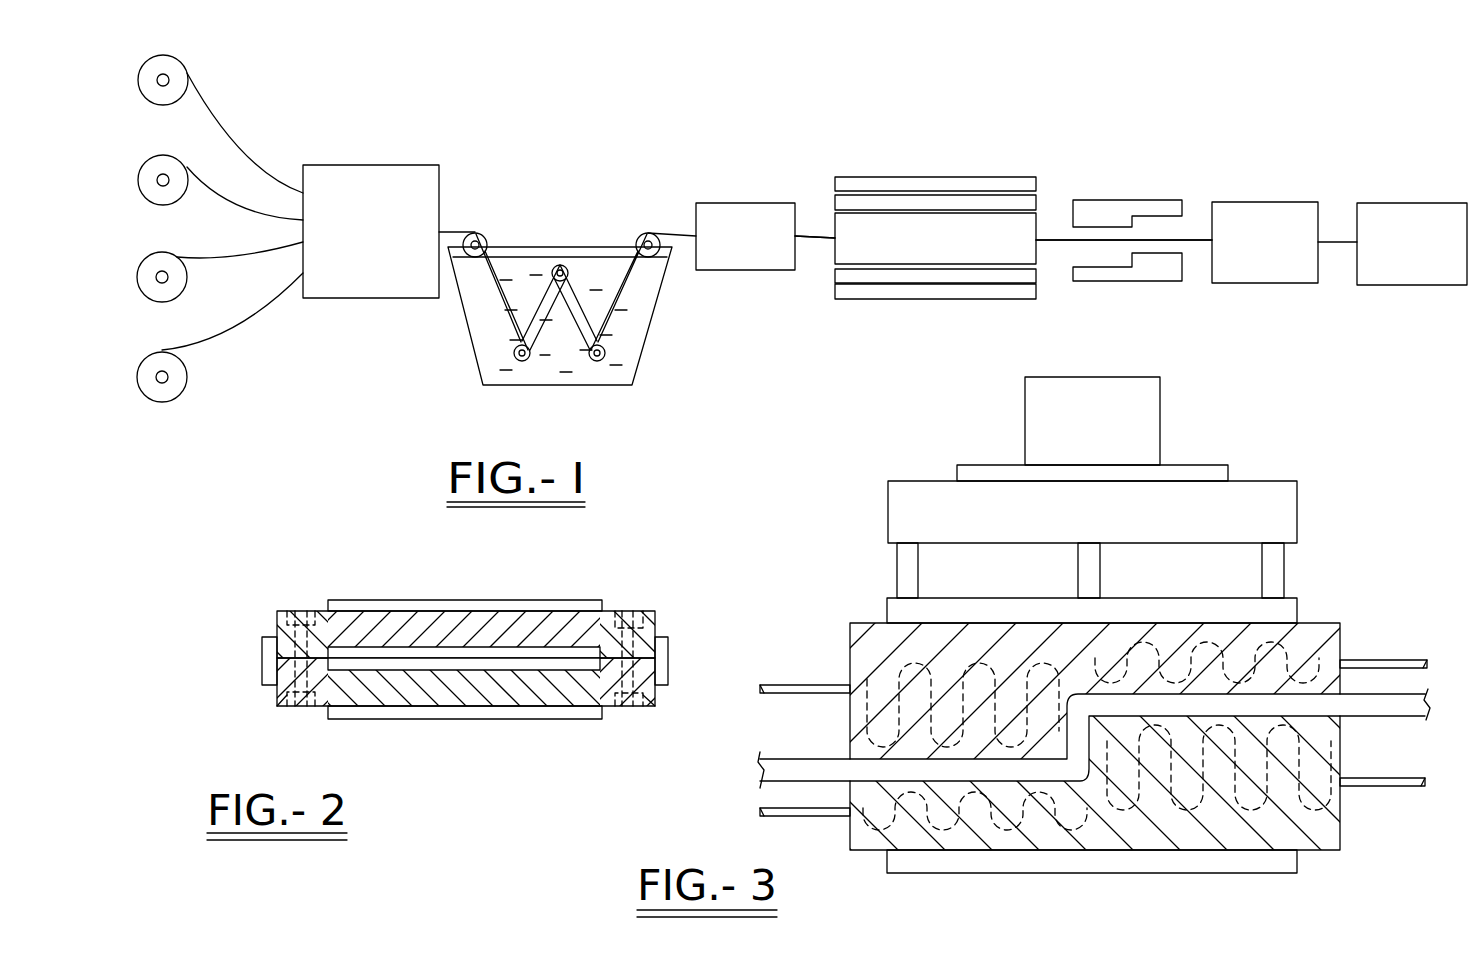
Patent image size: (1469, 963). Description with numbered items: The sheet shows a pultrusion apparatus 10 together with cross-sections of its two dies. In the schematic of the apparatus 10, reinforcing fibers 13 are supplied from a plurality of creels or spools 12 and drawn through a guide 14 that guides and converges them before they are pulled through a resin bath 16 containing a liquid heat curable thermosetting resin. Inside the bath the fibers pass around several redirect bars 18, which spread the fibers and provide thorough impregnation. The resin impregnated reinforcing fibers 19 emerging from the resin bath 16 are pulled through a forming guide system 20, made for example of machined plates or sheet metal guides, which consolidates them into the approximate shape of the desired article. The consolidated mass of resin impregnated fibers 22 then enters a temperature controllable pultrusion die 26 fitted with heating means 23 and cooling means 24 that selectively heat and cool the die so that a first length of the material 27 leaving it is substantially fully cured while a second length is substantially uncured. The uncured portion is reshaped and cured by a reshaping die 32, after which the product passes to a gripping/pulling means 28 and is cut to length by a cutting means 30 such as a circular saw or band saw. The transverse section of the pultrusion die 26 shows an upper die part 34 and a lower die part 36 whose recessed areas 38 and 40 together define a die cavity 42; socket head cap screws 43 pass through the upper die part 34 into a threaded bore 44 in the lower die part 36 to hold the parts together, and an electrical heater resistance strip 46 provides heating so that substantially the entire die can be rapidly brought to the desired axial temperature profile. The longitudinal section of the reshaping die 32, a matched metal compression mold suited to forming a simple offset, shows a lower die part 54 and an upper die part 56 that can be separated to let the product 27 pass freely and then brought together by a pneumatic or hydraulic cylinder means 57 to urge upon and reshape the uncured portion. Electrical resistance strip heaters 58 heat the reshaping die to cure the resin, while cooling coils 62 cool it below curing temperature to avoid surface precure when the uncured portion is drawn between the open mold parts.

In FIG. 1, the pultrusion apparatus 10 is at (412, 102).
In FIG. 1, the creels or spools 12 is at (153, 157).
In FIG. 1, the reinforcing fibers 13 is at (220, 130).
In FIG. 1, the guide 14 is at (362, 165).
In FIG. 1, the resin bath 16 is at (478, 342).
In FIG. 1, the redirect bars 18 is at (476, 233).
In FIG. 1, the resin impregnated reinforcing fibers 19 is at (660, 237).
In FIG. 1, the forming guide system 20 is at (733, 203).
In FIG. 1, the consolidated mass of resin impregnated fibers 22 is at (813, 237).
In FIG. 1, the heating means 23 is at (890, 200).
In FIG. 1, the cooling means 24 is at (972, 183).
In FIG. 1, the temperature controllable pultrusion die 26 is at (830, 250).
In FIG. 2, the temperature controllable pultrusion die 26 is at (338, 578).
In FIG. 1, the material emerging from the die 27 is at (1055, 237).
In FIG. 3, the material emerging from the die 27 is at (802, 759).
In FIG. 1, the gripping/pulling means 28 is at (1270, 202).
In FIG. 1, the cutting means 30 is at (1393, 203).
In FIG. 1, the reshaping die 32 is at (1141, 195).
In FIG. 3, the reshaping die 32 is at (1302, 462).
In FIG. 2, the upper die part 34 is at (523, 617).
In FIG. 2, the lower die part 36 is at (537, 702).
In FIG. 2, the recessed area 38 is at (480, 653).
In FIG. 2, the recessed area 40 is at (508, 667).
In FIG. 2, the die cavity 42 is at (373, 665).
In FIG. 2, the socket head cap screws 43 is at (298, 610).
In FIG. 2, the threaded bore 44 is at (270, 708).
In FIG. 2, the electrical heater resistance strip 46 is at (263, 658).
In FIG. 3, the lower die part 54 is at (1340, 823).
In FIG. 3, the upper die part 56 is at (1340, 647).
In FIG. 3, the pneumatic or hydraulic cylinder means 57 is at (1160, 400).
In FIG. 3, the electrical resistance strip heaters 58 is at (1297, 610).
In FIG. 3, the cooling coils 62 is at (807, 685).